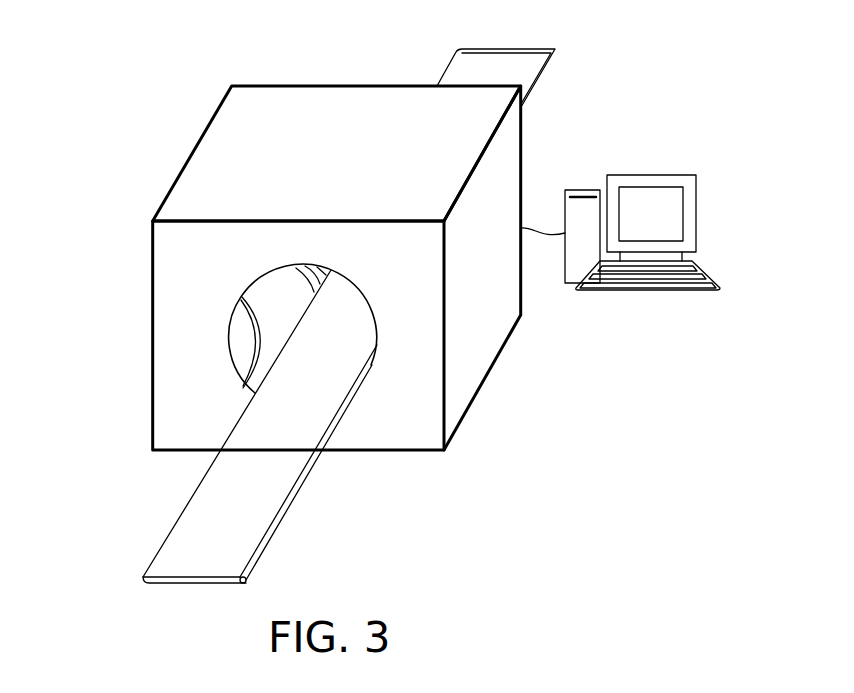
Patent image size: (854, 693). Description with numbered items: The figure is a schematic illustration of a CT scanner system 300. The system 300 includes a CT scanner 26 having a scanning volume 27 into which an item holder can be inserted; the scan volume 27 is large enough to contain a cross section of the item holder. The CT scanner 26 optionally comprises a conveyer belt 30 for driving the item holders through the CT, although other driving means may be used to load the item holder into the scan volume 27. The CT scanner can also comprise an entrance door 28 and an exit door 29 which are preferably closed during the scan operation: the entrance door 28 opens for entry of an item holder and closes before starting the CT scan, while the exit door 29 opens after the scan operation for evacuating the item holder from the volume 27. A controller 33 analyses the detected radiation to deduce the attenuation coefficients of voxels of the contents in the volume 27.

The CT scanner 26 is at (202, 133).
The scanning volume 27 is at (350, 356).
The entrance door 28 is at (233, 343).
The exit door 29 is at (307, 278).
The conveyer belt 30 is at (287, 510).
The CT scanner system 300 is at (557, 96).
The controller 33 is at (627, 174).